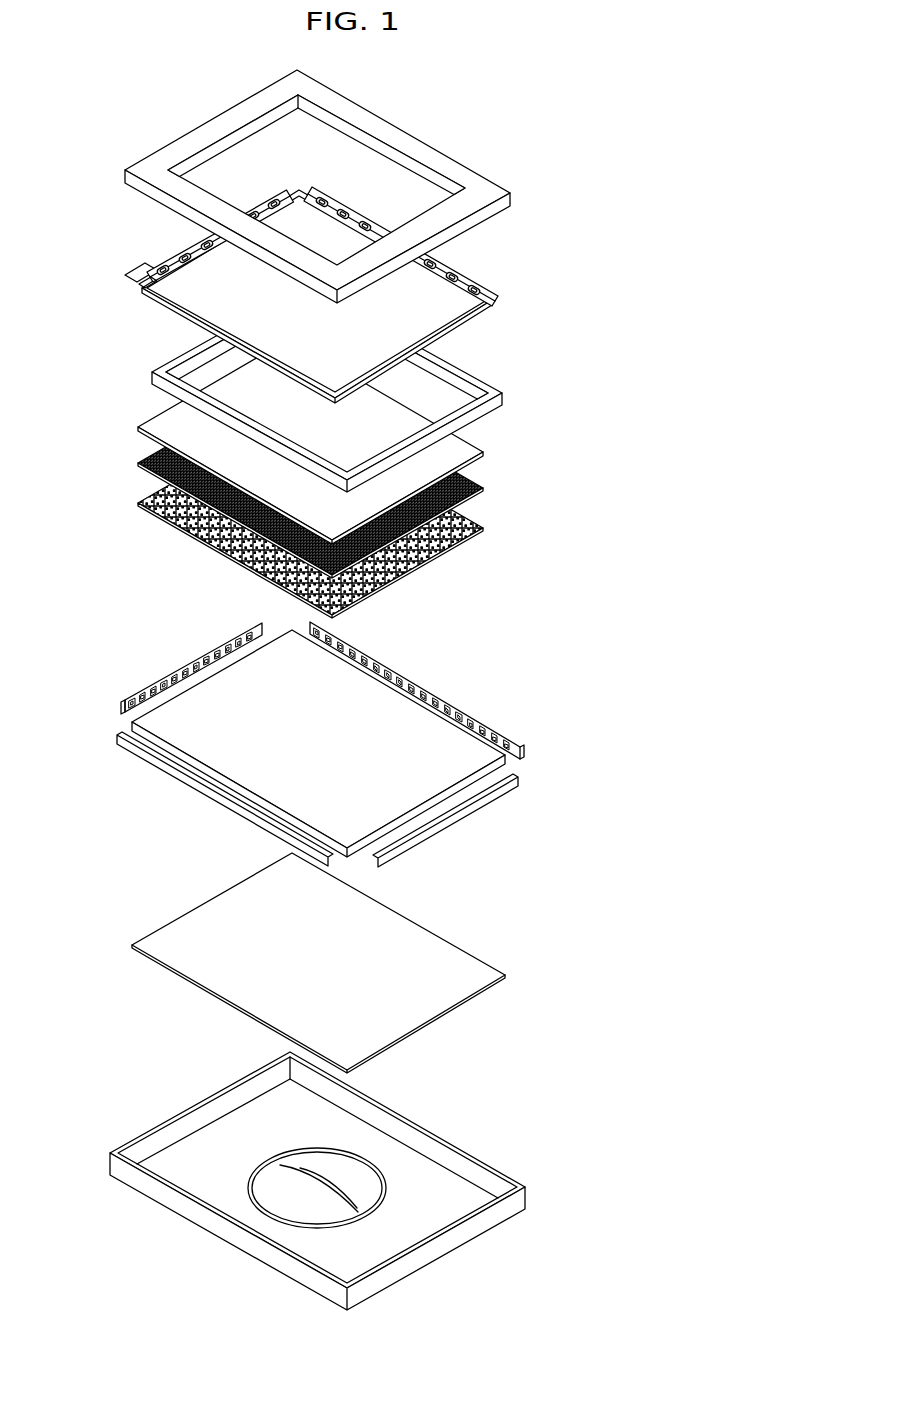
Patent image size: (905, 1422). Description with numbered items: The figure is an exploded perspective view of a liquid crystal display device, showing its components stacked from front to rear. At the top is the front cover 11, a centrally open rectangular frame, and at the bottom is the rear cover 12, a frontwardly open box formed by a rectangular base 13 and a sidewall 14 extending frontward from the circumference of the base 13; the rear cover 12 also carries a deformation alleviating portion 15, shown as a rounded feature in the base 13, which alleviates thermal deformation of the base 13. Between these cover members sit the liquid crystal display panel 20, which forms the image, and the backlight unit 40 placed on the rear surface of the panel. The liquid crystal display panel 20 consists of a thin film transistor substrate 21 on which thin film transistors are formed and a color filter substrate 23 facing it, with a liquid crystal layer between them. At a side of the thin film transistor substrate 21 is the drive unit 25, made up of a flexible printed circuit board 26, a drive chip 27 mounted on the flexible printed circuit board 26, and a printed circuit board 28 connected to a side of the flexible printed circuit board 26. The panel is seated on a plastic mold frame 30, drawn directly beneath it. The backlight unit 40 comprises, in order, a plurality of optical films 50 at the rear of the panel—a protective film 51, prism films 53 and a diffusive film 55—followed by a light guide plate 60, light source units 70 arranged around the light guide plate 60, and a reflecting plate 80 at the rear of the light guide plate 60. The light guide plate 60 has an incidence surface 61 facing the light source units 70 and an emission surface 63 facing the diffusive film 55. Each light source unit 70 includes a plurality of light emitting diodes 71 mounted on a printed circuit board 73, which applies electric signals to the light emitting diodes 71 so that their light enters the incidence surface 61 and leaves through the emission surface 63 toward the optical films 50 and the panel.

The front cover 11 is at (483, 180).
The rear cover 12 is at (317, 1178).
The base 13 is at (433, 1190).
The sidewall 14 is at (198, 1100).
The deformation alleviating portion 15 is at (278, 1197).
The liquid crystal display panel 20 is at (316, 295).
The thin film transistor substrate 21 is at (477, 323).
The color filter substrate 23 is at (470, 303).
The drive unit 25 is at (130, 263).
The flexible printed circuit board 26 is at (114, 293).
The drive chip 27 is at (142, 270).
The printed circuit board 28 is at (163, 248).
The mold frame 30 is at (500, 397).
The backlight unit 40 is at (383, 706).
The optical films 50 is at (370, 478).
The protective film 51 is at (347, 441).
The prism films 53 is at (473, 487).
The diffusive film 55 is at (467, 523).
The light guide plate 60 is at (330, 744).
The incidence surface 61 is at (272, 807).
The emission surface 63 is at (337, 695).
The light source units 70 is at (331, 728).
The light emitting diodes 71 is at (145, 695).
The printed circuit board 73 is at (195, 665).
The reflecting plate 80 is at (458, 967).